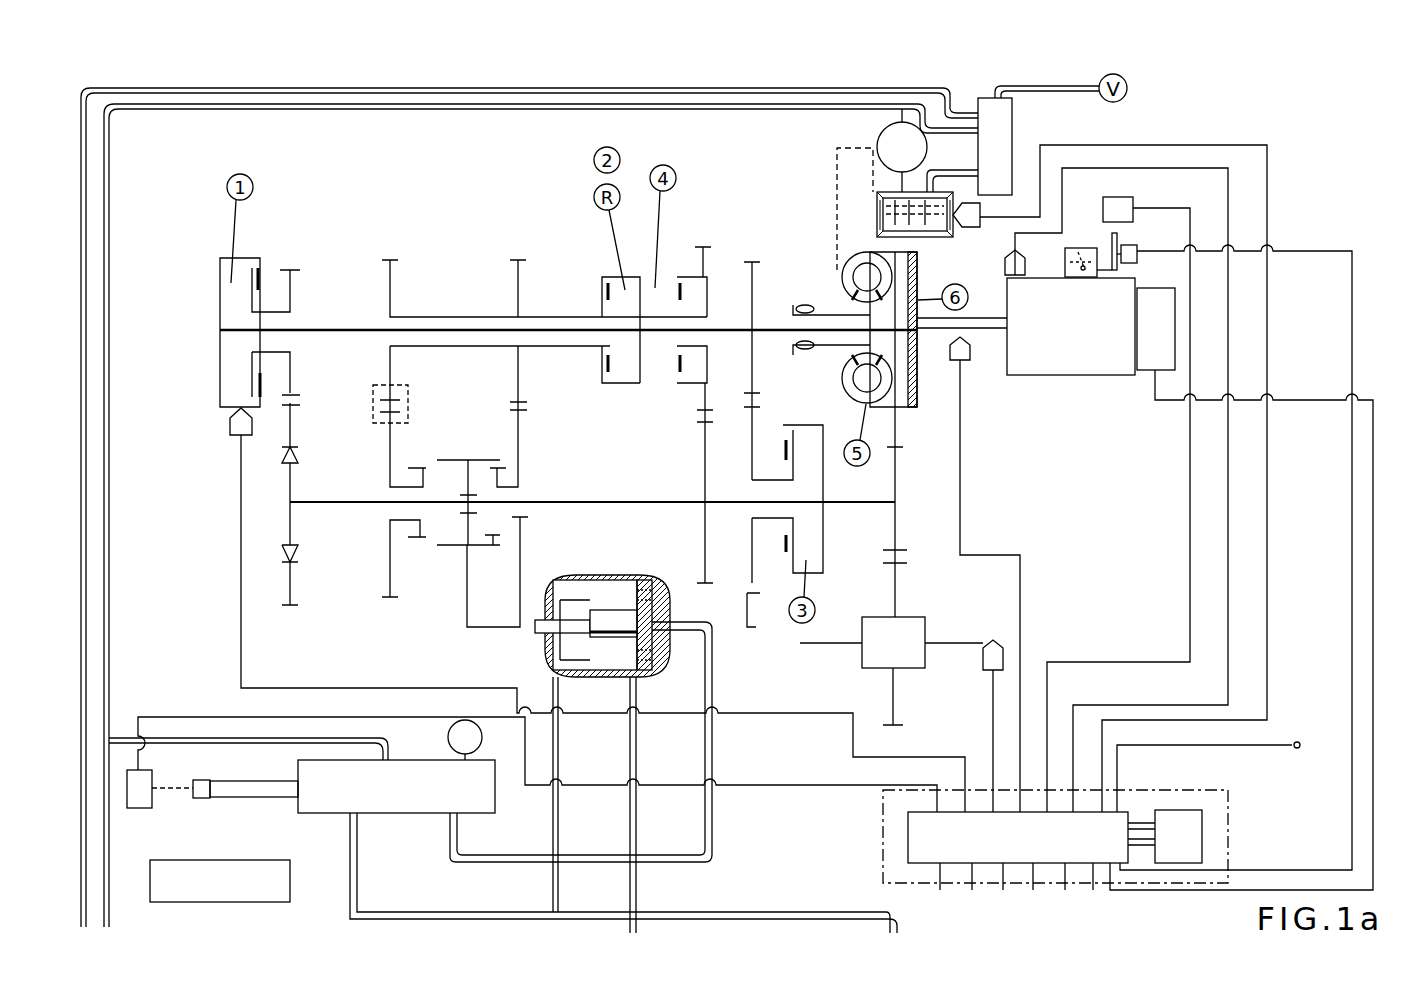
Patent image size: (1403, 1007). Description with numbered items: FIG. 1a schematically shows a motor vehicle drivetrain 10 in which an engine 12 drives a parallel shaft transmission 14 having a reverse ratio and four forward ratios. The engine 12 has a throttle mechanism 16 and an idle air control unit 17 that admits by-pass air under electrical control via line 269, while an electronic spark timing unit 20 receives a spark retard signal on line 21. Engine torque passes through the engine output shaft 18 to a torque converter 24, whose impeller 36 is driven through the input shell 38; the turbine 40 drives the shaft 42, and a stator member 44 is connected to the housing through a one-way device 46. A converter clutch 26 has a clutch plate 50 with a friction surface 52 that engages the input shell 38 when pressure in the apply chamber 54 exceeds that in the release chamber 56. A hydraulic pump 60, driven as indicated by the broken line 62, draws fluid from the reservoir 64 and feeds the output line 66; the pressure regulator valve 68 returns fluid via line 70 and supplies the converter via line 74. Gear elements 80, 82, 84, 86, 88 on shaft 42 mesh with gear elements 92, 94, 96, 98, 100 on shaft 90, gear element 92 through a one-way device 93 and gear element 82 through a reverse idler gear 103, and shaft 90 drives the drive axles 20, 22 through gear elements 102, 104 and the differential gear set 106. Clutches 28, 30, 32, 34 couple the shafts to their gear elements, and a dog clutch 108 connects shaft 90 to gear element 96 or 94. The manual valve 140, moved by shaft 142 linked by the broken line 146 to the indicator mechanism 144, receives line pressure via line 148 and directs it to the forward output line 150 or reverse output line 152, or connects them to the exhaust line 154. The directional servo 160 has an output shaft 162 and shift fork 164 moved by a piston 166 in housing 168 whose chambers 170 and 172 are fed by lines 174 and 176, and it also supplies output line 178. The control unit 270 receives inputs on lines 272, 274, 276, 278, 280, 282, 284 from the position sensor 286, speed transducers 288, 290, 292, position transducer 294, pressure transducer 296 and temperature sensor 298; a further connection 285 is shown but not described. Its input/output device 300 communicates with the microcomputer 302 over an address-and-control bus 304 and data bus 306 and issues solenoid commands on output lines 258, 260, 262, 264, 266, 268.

The motor vehicle drivetrain 10 is at (310, 188).
The engine 12 is at (1103, 372).
The parallel shaft transmission 14 is at (198, 362).
The throttle mechanism 16 is at (1083, 248).
The idle air control unit 17 is at (1140, 244).
The engine output shaft 18 is at (983, 318).
The drive axle 20 is at (1175, 325).
The spark retard signal line 21 is at (1375, 418).
The drive axle 22 is at (1022, 614).
The torque converter 24 is at (822, 212).
The clutch 26 is at (920, 283).
The clutch 28 is at (220, 302).
The clutch 30 is at (607, 277).
The clutch 32 is at (823, 515).
The clutch 34 is at (675, 282).
The impeller 36 is at (845, 260).
The input shell 38 is at (873, 395).
The turbine 40 is at (850, 372).
The transmission shaft 42 is at (773, 328).
The stator member 44 is at (850, 357).
The one-way device 46 is at (860, 303).
The clutch plate 50 is at (897, 352).
The friction surface 52 is at (904, 452).
The apply chamber 54 is at (903, 322).
The release chamber 56 is at (917, 318).
The positive displacement hydraulic pump 60 is at (877, 140).
The broken line 62 is at (838, 160).
The fluid reservoir 64 is at (877, 200).
The pump output line 66 is at (668, 110).
The pressure regulator valve 68 is at (1020, 145).
The return line 70 is at (960, 175).
The converter supply line 74 is at (417, 103).
The gear element 80 is at (292, 302).
The gear element 82 is at (392, 287).
The gear element 84 is at (445, 262).
The gear element 86 is at (708, 268).
The gear element 88 is at (754, 278).
The transmission shaft 90 is at (573, 500).
The gear element 92 is at (288, 592).
The one-way device 93 is at (300, 456).
The gear element 94 is at (390, 555).
The gear element 96 is at (510, 565).
The gear element 98 is at (705, 527).
The gear element 100 is at (753, 627).
The gear element 102 is at (895, 527).
The reverse idler gear 103 is at (412, 405).
The gear element 104 is at (897, 602).
The differential gear set 106 is at (925, 648).
The dog clutch 108 is at (460, 523).
The manual valve 140 is at (408, 813).
The manual valve shaft 142 is at (257, 778).
The indicator mechanism 144 is at (290, 878).
The broken line 146 is at (255, 800).
The input line 148 is at (267, 733).
The forward output line 150 is at (360, 885).
The reverse output line 152 is at (470, 862).
The exhaust line 154 is at (458, 758).
The directional servo 160 is at (582, 605).
The output shaft 162 is at (552, 612).
The shift fork 164 is at (462, 592).
The piston 166 is at (620, 612).
The servo housing 168 is at (546, 662).
The chamber 170 is at (580, 612).
The chamber 172 is at (662, 607).
The line 174 is at (559, 797).
The line 176 is at (713, 810).
The servo output line 178 is at (637, 730).
The output line 258 is at (910, 884).
The output line 260 is at (943, 888).
The output line 262 is at (975, 888).
The output line 264 is at (1010, 888).
The output line 266 is at (1065, 888).
The output line 268 is at (1097, 888).
The IAC control line 269 is at (1167, 254).
The control unit 270 is at (1238, 839).
The input line 272 is at (853, 728).
The input line 274 is at (937, 785).
The input line 276 is at (988, 712).
The input line 278 is at (1020, 585).
The input line 280 is at (1190, 525).
The input line 282 is at (1228, 420).
The input line 284 is at (1267, 425).
The switch input 285 is at (1280, 742).
The position sensor 286 is at (160, 758).
The speed transducer 288 is at (235, 440).
The speed transducer 290 is at (1003, 658).
The speed transducer 292 is at (985, 380).
The position transducer 294 is at (1130, 197).
The pressure transducer 296 is at (1022, 268).
The temperature sensor 298 is at (962, 228).
The input/output device 300 is at (927, 839).
The microcomputer 302 is at (1185, 810).
The address-and-control bus 304 is at (1140, 823).
The bi-directional data bus 306 is at (1180, 864).